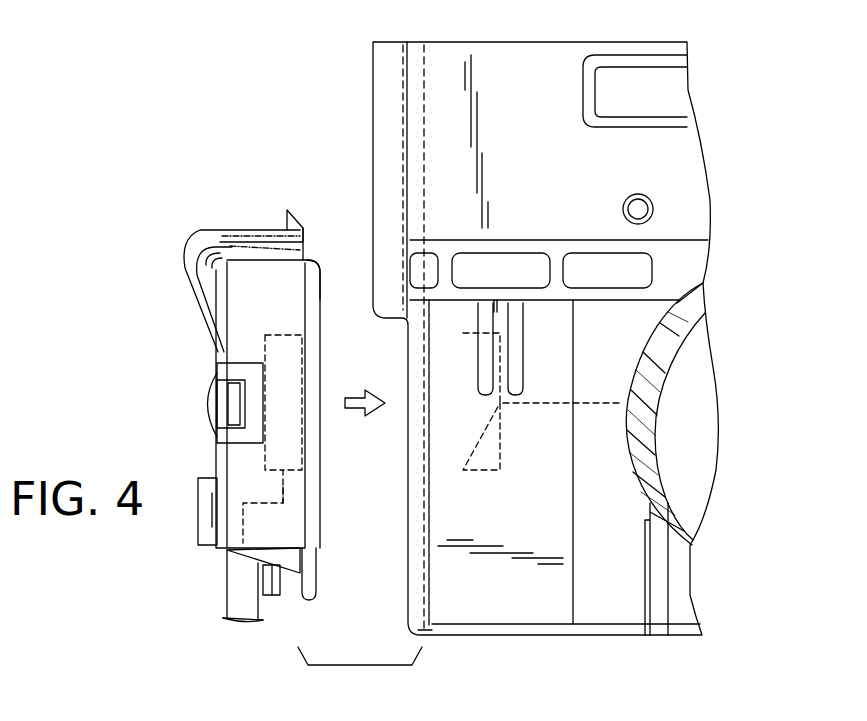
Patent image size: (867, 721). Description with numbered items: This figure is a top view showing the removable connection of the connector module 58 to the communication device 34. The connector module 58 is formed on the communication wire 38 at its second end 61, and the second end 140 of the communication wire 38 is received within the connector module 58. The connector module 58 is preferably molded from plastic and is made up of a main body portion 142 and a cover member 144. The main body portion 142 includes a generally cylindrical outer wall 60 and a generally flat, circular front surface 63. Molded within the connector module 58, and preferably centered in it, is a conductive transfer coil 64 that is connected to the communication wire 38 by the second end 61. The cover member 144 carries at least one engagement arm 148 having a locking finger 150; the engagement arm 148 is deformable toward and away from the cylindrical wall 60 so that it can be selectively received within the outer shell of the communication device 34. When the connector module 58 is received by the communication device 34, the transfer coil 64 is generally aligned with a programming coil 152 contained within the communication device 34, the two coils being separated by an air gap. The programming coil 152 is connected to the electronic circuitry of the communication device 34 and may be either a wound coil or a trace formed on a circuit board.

The communication device 34 is at (548, 55).
The communication wire 38 is at (240, 600).
The connector module 58 is at (183, 388).
The cylindrical wall 60 is at (245, 257).
The second end 61 is at (285, 488).
The front surface 63 is at (320, 290).
The transfer coil 64 is at (285, 360).
The second end 140 is at (240, 568).
The main body portion 142 is at (267, 273).
The cover member 144 is at (220, 318).
The engagement arm 148 is at (203, 235).
The locking finger 150 is at (295, 222).
The programming coil 152 is at (483, 472).